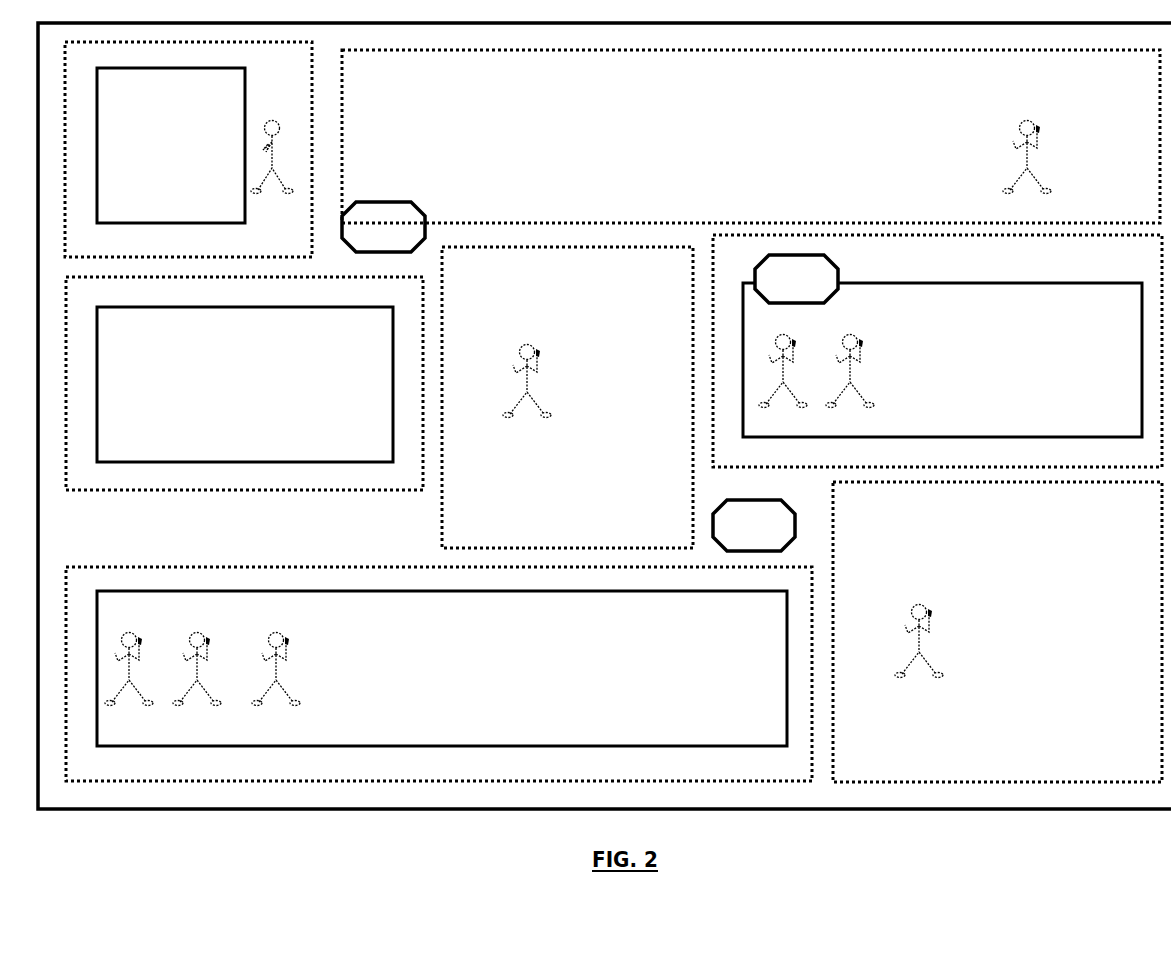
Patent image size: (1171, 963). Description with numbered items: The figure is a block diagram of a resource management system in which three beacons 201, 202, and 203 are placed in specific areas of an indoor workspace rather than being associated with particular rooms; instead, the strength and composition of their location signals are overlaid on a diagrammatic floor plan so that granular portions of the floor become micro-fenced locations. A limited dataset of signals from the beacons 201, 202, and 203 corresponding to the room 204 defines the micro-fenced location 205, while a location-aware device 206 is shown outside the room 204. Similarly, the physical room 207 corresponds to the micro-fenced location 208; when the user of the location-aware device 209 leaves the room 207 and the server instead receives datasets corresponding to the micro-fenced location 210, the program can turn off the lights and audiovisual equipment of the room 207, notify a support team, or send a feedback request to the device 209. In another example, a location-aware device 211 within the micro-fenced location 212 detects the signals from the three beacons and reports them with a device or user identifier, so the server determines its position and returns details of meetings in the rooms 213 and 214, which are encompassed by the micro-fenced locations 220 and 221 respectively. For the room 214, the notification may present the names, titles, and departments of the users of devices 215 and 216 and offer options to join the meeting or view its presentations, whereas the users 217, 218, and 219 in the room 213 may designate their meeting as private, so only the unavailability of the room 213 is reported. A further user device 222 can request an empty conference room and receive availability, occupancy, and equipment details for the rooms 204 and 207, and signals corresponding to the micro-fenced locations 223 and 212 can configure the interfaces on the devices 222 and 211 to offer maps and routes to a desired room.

The beacon 201 is at (383, 227).
The beacon 202 is at (754, 525).
The beacon 203 is at (796, 279).
The room 204 is at (171, 145).
The micro-fenced location 205 is at (188, 149).
The location-aware device 206 is at (272, 146).
The physical room 207 is at (245, 384).
The micro-fenced location 208 is at (244, 383).
The location-aware device 209 is at (527, 368).
The micro-fenced location 210 is at (567, 397).
The location-aware device 211 is at (919, 629).
The micro-fenced location 212 is at (997, 632).
The room 213 is at (442, 668).
The room 214 is at (942, 360).
The device 215 is at (783, 359).
The device 216 is at (850, 359).
The user 217 is at (129, 658).
The user 218 is at (197, 658).
The user 219 is at (276, 658).
The micro-fenced location 220 is at (439, 674).
The micro-fenced location 221 is at (937, 351).
The device 222 is at (1027, 145).
The micro-fenced location 223 is at (751, 136).